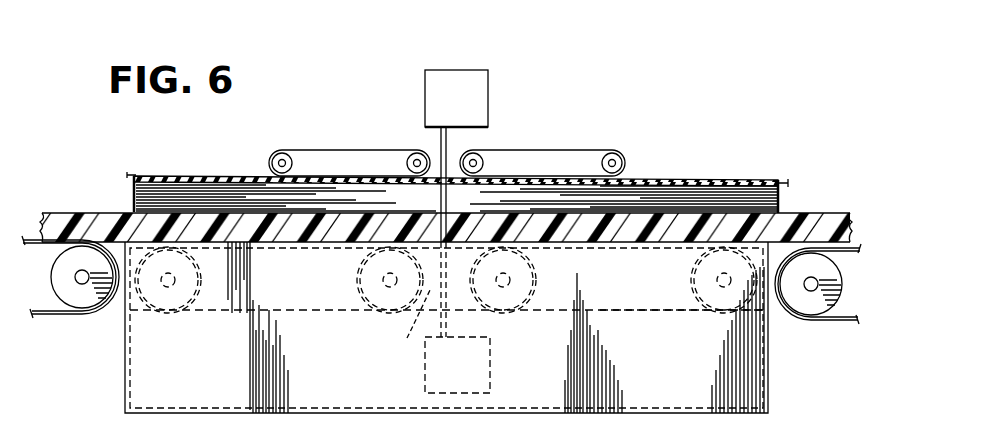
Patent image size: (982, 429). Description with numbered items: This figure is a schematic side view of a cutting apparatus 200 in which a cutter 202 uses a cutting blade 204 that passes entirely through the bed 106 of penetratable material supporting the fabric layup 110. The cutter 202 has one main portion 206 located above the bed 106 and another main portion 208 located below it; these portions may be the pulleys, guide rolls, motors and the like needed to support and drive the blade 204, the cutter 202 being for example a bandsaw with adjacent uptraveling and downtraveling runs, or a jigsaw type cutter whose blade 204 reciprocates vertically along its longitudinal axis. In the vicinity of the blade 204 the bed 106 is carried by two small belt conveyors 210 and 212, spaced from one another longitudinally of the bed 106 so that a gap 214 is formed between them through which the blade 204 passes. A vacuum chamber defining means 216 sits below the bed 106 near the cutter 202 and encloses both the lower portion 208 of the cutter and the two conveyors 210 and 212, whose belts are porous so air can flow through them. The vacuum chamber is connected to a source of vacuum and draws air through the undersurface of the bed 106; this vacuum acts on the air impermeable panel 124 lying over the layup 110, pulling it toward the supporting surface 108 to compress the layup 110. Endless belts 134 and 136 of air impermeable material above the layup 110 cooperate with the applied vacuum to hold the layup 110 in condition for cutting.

The bed of penetratable material 106 is at (62, 212).
The supporting surface 108 is at (100, 212).
The fabric layup 110 is at (780, 203).
The air impermeable sheet 124 is at (735, 181).
The endless belt 134 is at (325, 149).
The endless belt 136 is at (533, 151).
The cutting apparatus 200 is at (512, 84).
The cutter 202 is at (432, 56).
The cutting blade 204 is at (438, 152).
The main portion of cutter 206 is at (462, 70).
The main portion of cutter 208 is at (512, 342).
The belt conveyor 210 is at (323, 300).
The belt conveyor 212 is at (690, 318).
The gap 214 is at (402, 321).
The vacuum chamber defining means 216 is at (106, 356).